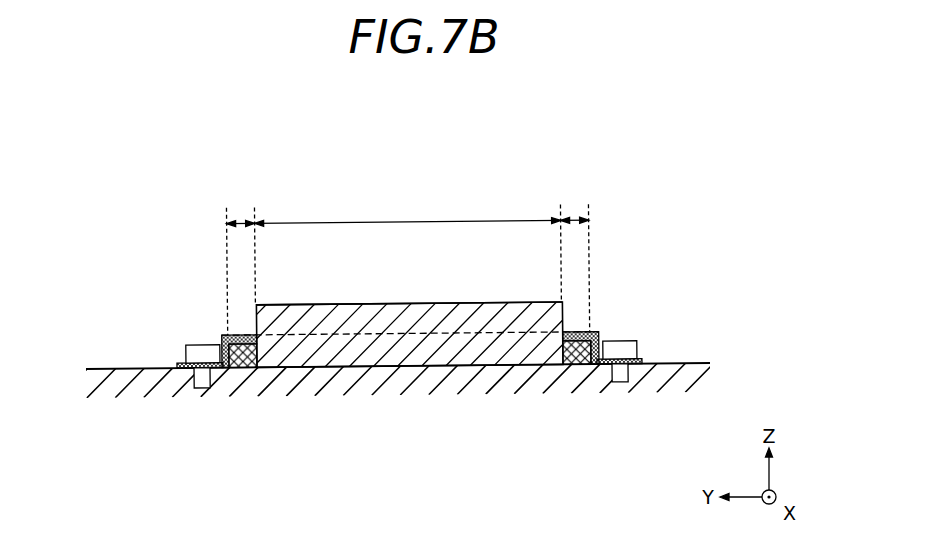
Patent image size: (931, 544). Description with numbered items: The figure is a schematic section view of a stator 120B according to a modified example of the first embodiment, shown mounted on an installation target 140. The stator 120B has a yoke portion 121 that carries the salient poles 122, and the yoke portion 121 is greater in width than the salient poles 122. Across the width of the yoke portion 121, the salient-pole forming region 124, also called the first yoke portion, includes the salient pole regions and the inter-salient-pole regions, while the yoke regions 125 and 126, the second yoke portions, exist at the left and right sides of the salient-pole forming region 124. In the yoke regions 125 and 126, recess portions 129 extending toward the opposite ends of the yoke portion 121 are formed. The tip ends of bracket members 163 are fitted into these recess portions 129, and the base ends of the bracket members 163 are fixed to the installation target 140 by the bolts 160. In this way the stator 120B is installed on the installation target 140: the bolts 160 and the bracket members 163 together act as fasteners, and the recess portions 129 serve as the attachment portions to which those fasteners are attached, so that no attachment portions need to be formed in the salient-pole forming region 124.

The stator 120B is at (380, 338).
The yoke portion 121 is at (427, 352).
The salient poles 122 is at (430, 317).
The salient-pole forming region 124 is at (411, 222).
The yoke region 125 is at (248, 222).
The yoke region 126 is at (578, 222).
The recess portions 129 is at (242, 342).
The installation target 140 is at (698, 366).
The bolts 160 is at (201, 343).
The bracket members 163 is at (222, 333).